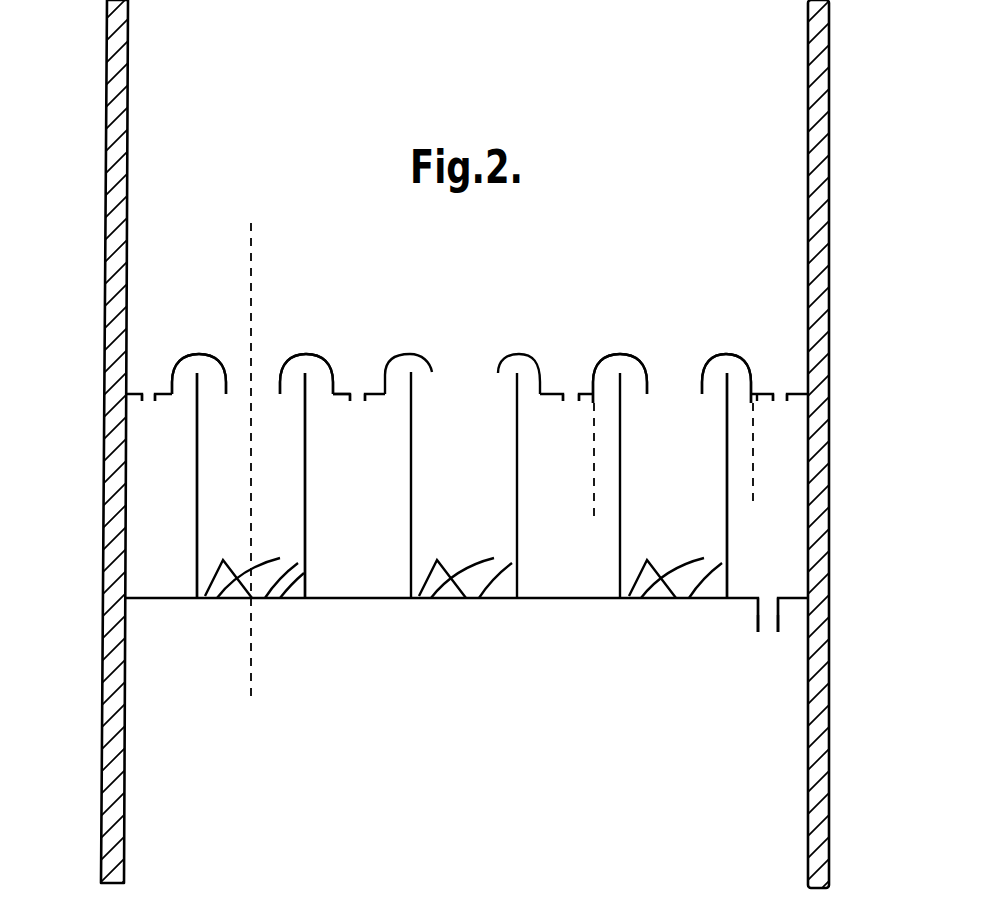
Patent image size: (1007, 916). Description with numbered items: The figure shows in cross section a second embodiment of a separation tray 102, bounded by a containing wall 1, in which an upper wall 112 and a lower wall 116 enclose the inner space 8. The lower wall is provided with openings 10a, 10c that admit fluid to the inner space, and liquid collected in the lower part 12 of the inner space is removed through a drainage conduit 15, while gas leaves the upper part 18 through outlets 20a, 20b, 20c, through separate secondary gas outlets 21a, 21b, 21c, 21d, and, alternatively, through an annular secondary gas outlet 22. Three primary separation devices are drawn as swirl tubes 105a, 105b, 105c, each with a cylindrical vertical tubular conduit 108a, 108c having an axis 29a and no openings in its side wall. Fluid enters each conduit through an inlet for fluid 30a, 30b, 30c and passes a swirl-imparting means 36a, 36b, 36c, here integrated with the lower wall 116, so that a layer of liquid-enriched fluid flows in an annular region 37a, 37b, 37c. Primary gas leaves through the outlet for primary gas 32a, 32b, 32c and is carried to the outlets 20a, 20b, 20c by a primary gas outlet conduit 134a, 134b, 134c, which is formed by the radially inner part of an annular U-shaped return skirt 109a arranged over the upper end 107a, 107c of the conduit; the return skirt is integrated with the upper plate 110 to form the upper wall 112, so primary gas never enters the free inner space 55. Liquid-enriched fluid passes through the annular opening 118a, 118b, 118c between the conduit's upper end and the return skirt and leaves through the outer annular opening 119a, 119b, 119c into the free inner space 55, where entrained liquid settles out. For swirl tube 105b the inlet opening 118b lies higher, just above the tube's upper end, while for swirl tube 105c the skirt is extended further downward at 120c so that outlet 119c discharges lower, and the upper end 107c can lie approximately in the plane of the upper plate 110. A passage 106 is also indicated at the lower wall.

The housing wall 1 is at (831, 185).
The inner space 8 is at (340, 570).
The opening 10a is at (228, 598).
The opening 10c is at (640, 598).
The lower part of the inner space 12 is at (785, 583).
The drainage conduit 15 is at (757, 617).
The upper part of the inner space 18 is at (793, 418).
The outlet 20a is at (237, 364).
The outlet 20b is at (473, 372).
The outlet 20c is at (682, 358).
The secondary gas outlet 21a is at (150, 392).
The secondary gas outlet 21b is at (365, 380).
The secondary gas outlet 21c is at (572, 390).
The secondary gas outlet 21d is at (778, 390).
The annular secondary gas outlet 22 is at (597, 368).
The axis 29a is at (253, 236).
The inlet for fluid 30a is at (283, 598).
The inlet for fluid 30b is at (497, 598).
The inlet for fluid 30c is at (658, 598).
The outlet for primary gas 32a is at (288, 388).
The outlet for primary gas 32b is at (455, 380).
The outlet for primary gas 32c is at (667, 390).
The swirl-imparting means 36a is at (213, 572).
The swirl-imparting means 36b is at (413, 598).
The swirl-imparting means 36c is at (628, 598).
The annular region 37a is at (295, 545).
The annular region 37b is at (400, 518).
The annular region 37c is at (628, 527).
The free inner space 55 is at (553, 558).
The separation tray 102 is at (357, 602).
The swirl tube 105a is at (190, 580).
The swirl tube 105b is at (405, 573).
The swirl tube 105c is at (612, 575).
The root passage 106 is at (432, 598).
The upper end of the conduit 107a is at (197, 375).
The upper end of the conduit 107c is at (723, 373).
The cylindrical vertical tubular conduit 108a is at (197, 478).
The cylindrical vertical tubular conduit 108c is at (727, 530).
The annular U-shaped return skirt 109a is at (200, 354).
The upper plate 110 is at (352, 372).
The upper wall 112 is at (422, 357).
The lower wall 116 is at (563, 598).
The annular opening 118a is at (207, 383).
The annular inlet opening 118b is at (413, 373).
The annular opening 118c is at (628, 390).
The outer annular opening 119a is at (315, 390).
The outer annular opening 119b is at (395, 386).
The outer annular opening 119c is at (735, 503).
The return skirt extension 120c is at (753, 433).
The primary gas outlet conduit 134a is at (282, 370).
The primary gas outlet conduit 134b is at (432, 368).
The primary gas outlet conduit 134c is at (650, 373).